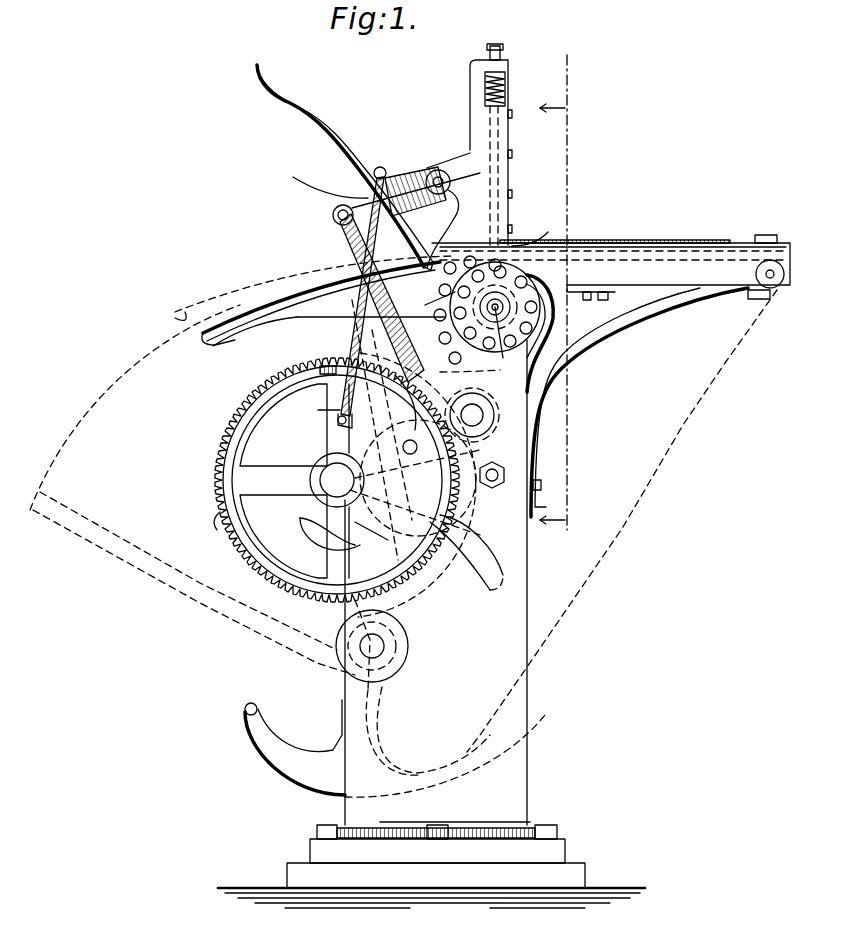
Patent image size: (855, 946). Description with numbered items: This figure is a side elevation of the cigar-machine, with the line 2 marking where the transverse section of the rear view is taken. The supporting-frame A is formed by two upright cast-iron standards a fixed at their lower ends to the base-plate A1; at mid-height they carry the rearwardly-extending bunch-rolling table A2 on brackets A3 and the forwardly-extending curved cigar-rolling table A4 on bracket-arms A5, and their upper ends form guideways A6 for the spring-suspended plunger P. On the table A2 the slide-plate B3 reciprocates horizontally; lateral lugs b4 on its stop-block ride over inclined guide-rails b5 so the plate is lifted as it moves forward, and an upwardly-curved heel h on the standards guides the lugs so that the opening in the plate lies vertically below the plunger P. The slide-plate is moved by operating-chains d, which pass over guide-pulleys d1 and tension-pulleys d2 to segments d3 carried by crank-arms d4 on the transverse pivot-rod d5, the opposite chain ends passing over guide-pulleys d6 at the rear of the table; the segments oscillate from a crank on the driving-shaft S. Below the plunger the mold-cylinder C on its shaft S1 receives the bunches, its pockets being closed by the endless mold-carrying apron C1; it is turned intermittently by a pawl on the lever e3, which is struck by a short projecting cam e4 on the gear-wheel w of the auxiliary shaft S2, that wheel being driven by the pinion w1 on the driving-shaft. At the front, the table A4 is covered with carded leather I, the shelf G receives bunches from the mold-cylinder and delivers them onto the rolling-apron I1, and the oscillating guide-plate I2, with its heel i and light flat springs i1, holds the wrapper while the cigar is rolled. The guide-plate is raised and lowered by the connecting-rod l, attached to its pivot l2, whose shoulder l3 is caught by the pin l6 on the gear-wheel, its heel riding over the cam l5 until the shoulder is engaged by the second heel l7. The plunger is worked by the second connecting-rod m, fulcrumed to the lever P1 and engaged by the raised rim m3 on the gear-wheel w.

The section line 2 2 is at (553, 300).
The supporting-frame A is at (437, 582).
The upright cast-iron standards a is at (437, 817).
The base-plate A1 is at (600, 872).
The bunch-rolling table A2 is at (611, 271).
The brackets A3 is at (585, 366).
The curved cigar-rolling table A4 is at (246, 326).
The bracket-arms A5 is at (371, 330).
The guideways A6 is at (490, 135).
The slide-plate B3 is at (695, 255).
The lateral lugs b4 is at (769, 226).
The inclined guide-rails b5 is at (628, 230).
The mold-cylinder C is at (487, 310).
The endless mold-carrying apron C1 is at (548, 320).
The operating-chains d is at (640, 262).
The guide-pulleys d1 is at (500, 272).
The tension-pulleys d2 is at (432, 478).
The segments d3 is at (458, 758).
The crank-arms d4 is at (380, 634).
The transverse pivot-rod d5 is at (385, 645).
The guide-pulleys d6 is at (783, 272).
The lever e3 is at (397, 402).
The projecting cam e4 is at (330, 370).
The shelf G is at (432, 307).
The heel h is at (530, 234).
The heel i is at (416, 210).
The light flat springs i1 is at (334, 214).
The surface covering I is at (262, 300).
The rolling-apron I1 is at (313, 283).
The oscillating guide-plate I2 is at (345, 167).
The connecting-rod l is at (318, 400).
The laterally-extending pivot l2 is at (380, 168).
The shoulder l3 is at (335, 412).
The cam l5 is at (415, 492).
The pin l6 is at (338, 422).
The second heel l7 is at (365, 543).
The connecting-rod m is at (379, 298).
The raised rim m3 is at (218, 517).
The plunger P is at (495, 190).
The lever P1 is at (417, 182).
The driving-shaft S is at (474, 415).
The shaft of the mold-cylinder S1 is at (479, 377).
The auxiliary shaft S2 is at (337, 480).
The gear-wheel w is at (213, 462).
The pinion w1 is at (481, 414).